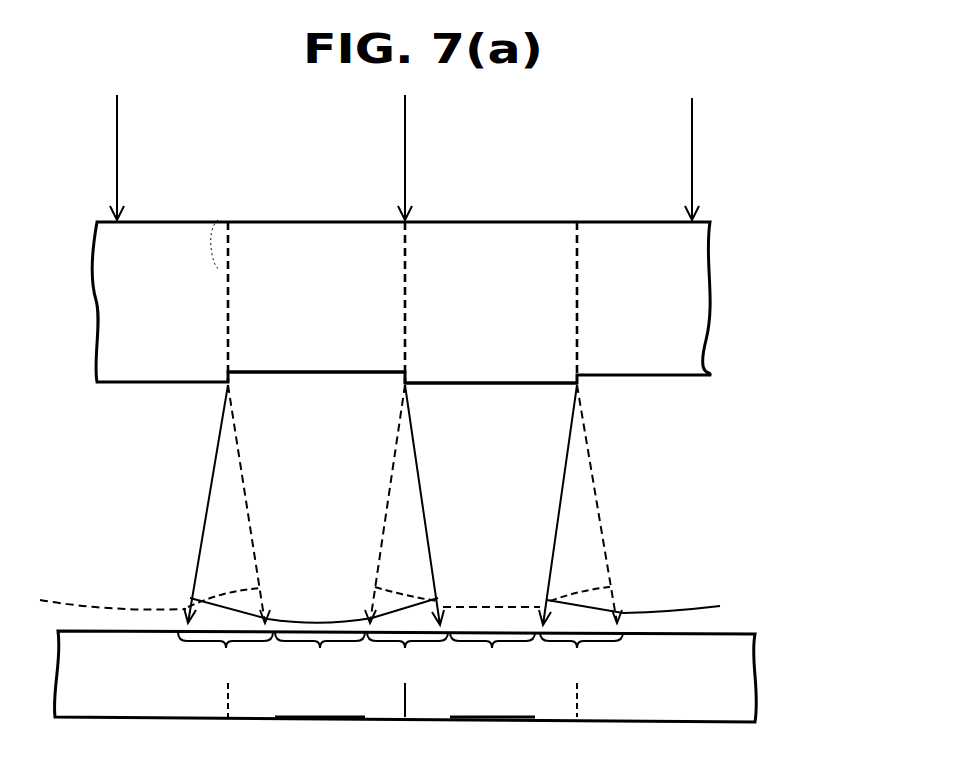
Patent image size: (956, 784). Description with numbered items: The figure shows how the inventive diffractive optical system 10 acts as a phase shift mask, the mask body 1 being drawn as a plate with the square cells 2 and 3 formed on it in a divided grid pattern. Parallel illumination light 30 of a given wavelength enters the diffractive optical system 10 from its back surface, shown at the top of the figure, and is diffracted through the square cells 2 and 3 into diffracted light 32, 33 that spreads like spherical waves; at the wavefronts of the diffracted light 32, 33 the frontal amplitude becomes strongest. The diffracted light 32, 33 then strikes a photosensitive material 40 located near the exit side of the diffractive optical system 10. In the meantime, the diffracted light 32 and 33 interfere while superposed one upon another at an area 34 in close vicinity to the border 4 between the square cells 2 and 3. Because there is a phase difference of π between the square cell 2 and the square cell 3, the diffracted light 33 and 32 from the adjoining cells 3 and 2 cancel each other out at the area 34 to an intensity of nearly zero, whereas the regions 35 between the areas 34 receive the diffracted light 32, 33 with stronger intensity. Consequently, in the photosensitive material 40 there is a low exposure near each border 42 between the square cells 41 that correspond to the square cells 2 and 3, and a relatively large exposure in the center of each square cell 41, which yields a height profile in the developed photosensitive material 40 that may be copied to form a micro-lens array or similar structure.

The phase shift mask substrate 1 is at (110, 271).
The square cell 2 is at (315, 383).
The square cell 3 is at (496, 384).
The border 4 is at (228, 283).
The diffractive optical system 10 is at (705, 303).
The parallel illumination light 30 is at (692, 165).
The diffracted light 32 is at (206, 518).
The diffracted light 33 is at (380, 520).
The area 34 is at (400, 659).
The unexposed region on substrate 35 is at (405, 659).
The photosensitive material 40 is at (733, 680).
The square cell 41 is at (322, 697).
The border 42 is at (226, 697).